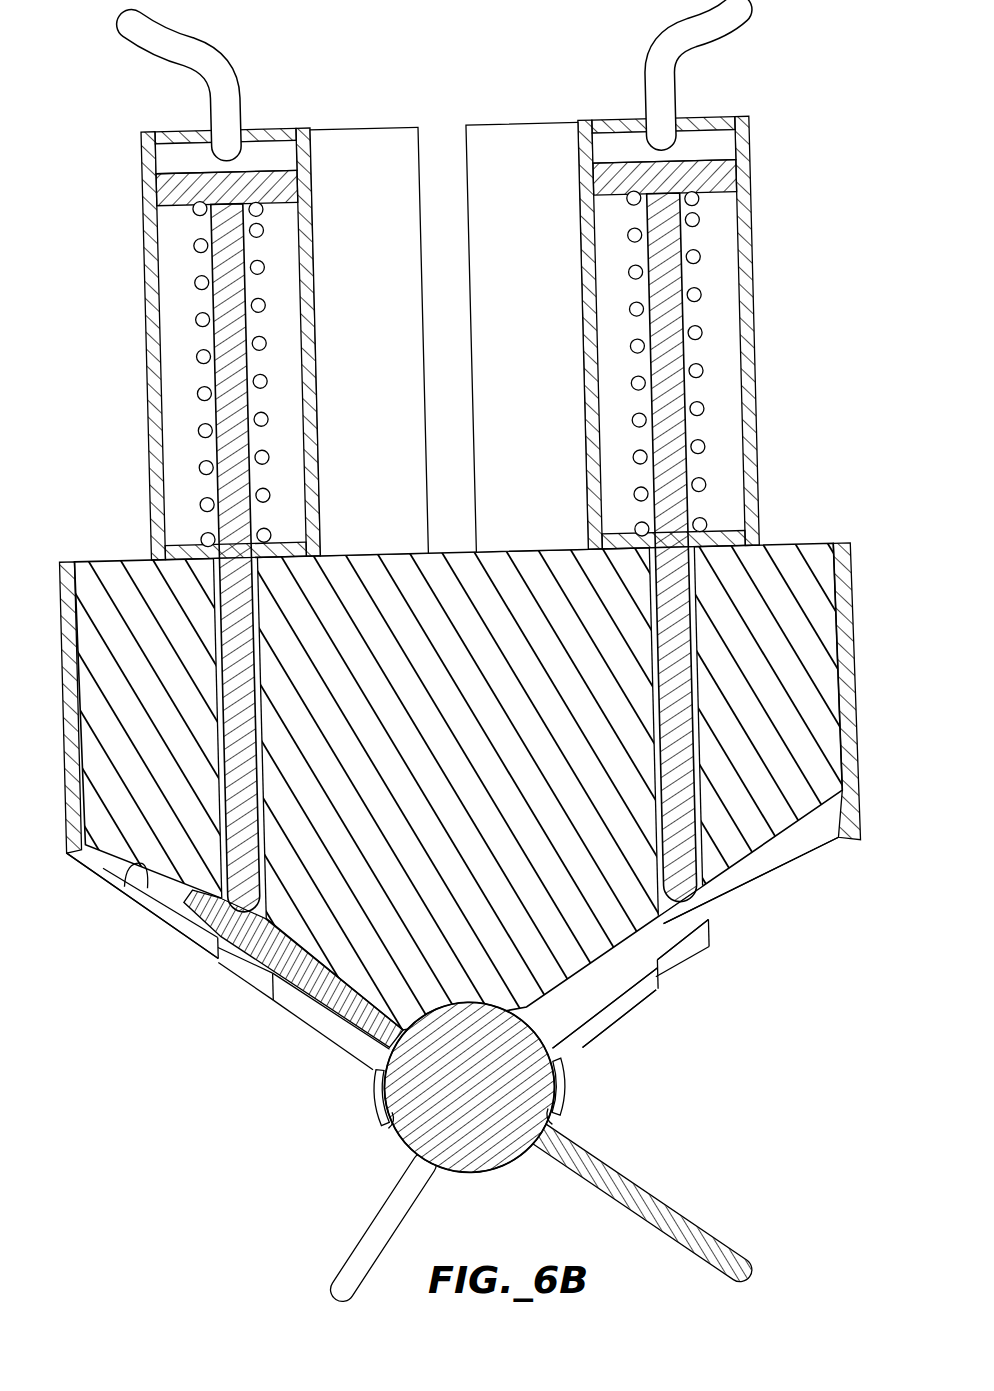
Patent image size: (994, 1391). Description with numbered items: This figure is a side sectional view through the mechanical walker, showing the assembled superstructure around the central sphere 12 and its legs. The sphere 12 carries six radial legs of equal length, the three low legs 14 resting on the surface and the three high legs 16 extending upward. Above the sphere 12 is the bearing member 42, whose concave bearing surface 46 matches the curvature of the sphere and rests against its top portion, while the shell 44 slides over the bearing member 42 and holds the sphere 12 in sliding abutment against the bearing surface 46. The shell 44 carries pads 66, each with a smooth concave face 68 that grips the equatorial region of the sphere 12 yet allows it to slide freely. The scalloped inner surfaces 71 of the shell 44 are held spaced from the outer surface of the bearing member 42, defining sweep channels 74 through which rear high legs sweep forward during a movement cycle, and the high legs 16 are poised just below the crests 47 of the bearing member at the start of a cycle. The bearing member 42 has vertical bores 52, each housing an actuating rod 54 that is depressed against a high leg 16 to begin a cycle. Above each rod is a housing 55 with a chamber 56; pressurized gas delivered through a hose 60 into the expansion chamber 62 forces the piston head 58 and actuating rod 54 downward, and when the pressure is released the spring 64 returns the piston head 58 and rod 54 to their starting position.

The central sphere 12 is at (395, 1128).
The low legs 14 is at (360, 1243).
The high legs 16 is at (260, 938).
The bearing member 42 is at (780, 540).
The shell 44 is at (615, 1015).
The bearing surface 46 is at (515, 998).
The crests 47 is at (730, 868).
The vertical bores 52 is at (263, 717).
The actuating rod 54 is at (250, 772).
The housing 55 is at (145, 318).
The chamber 56 is at (738, 305).
The piston head 58 is at (158, 188).
The hose 60 is at (172, 52).
The expansion chamber 62 is at (162, 152).
The spring 64 is at (198, 438).
The pads 66 is at (560, 1090).
The concave face 68 is at (370, 1113).
The scalloped inner surfaces 71 is at (135, 875).
The sweep channels 74 is at (170, 885).